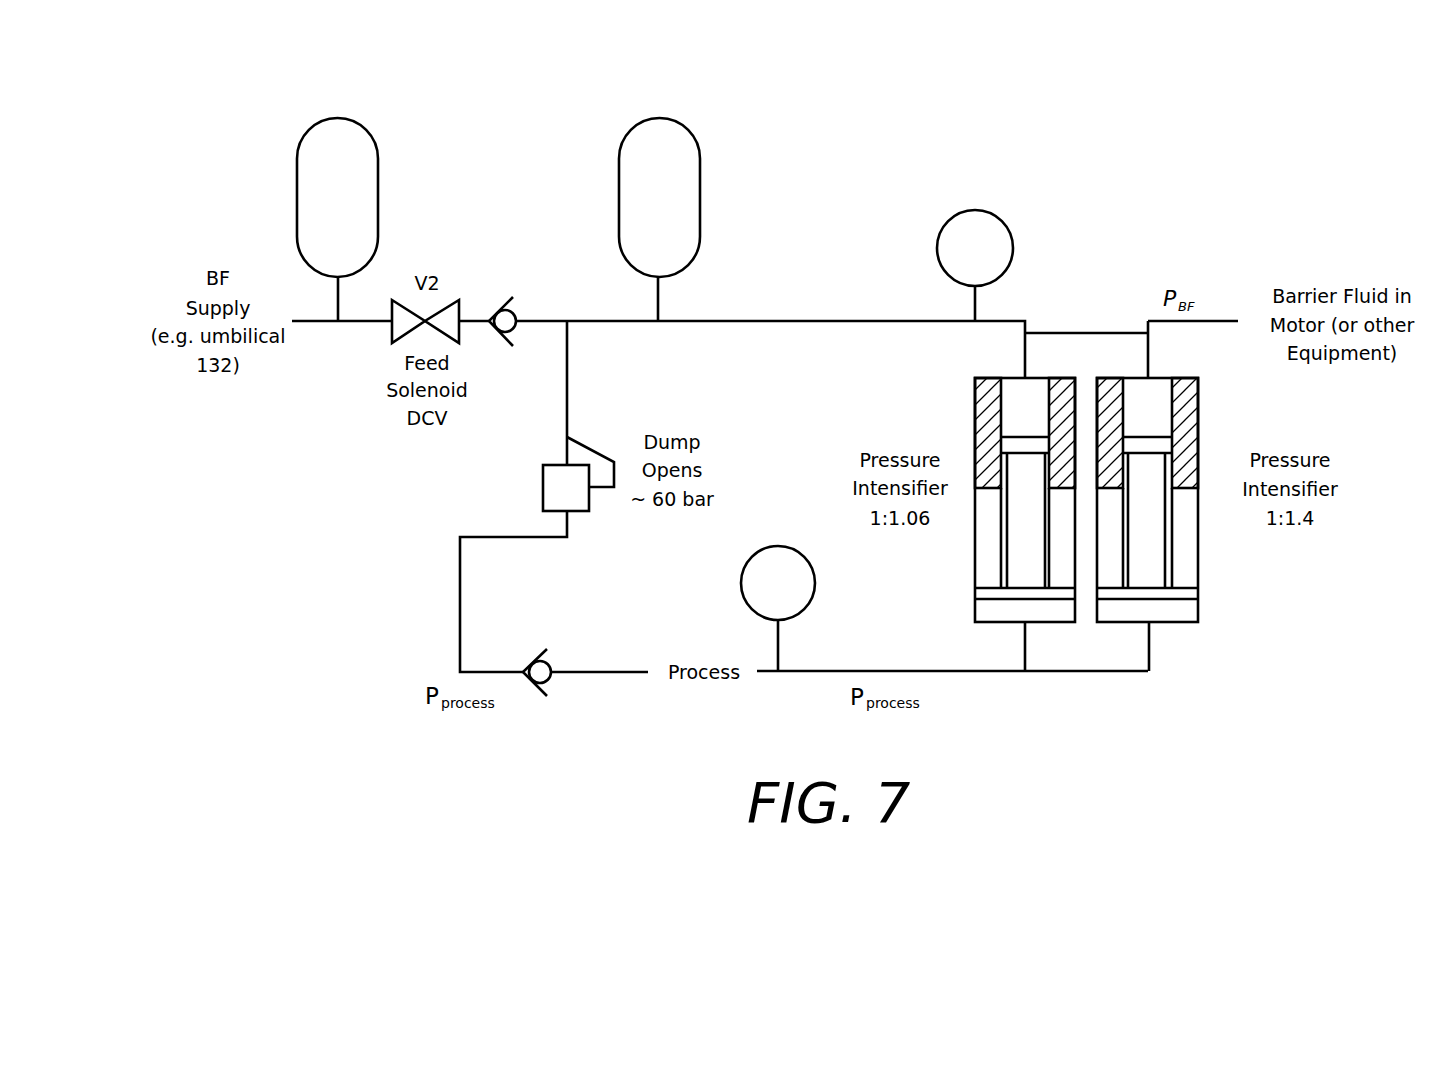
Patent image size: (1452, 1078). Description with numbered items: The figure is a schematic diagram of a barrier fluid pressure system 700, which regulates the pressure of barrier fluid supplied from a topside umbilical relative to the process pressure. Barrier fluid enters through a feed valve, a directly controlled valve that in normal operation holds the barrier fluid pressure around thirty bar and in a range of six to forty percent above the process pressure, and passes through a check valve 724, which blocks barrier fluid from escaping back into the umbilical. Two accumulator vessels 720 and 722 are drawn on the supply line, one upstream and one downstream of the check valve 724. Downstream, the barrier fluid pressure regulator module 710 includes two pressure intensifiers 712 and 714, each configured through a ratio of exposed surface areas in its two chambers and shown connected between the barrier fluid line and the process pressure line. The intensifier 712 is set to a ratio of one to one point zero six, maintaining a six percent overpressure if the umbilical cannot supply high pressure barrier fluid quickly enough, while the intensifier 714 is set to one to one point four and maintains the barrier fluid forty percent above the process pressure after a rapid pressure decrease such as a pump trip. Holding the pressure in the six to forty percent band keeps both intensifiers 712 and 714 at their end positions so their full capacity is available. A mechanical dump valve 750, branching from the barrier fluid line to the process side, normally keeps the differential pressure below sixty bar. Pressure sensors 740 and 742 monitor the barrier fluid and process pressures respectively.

The barrier fluid pressure system 700 is at (896, 89).
The barrier fluid pressure regulator module 710 is at (891, 389).
The pressure intensifier 712 is at (975, 533).
The pressure intensifier 714 is at (1198, 553).
The accumulator 720 is at (297, 163).
The accumulator 722 is at (619, 168).
The check valve 724 is at (519, 300).
The pressure sensor 740 is at (937, 235).
The pressure sensor 742 is at (742, 580).
The mechanical dump valve 750 is at (529, 484).